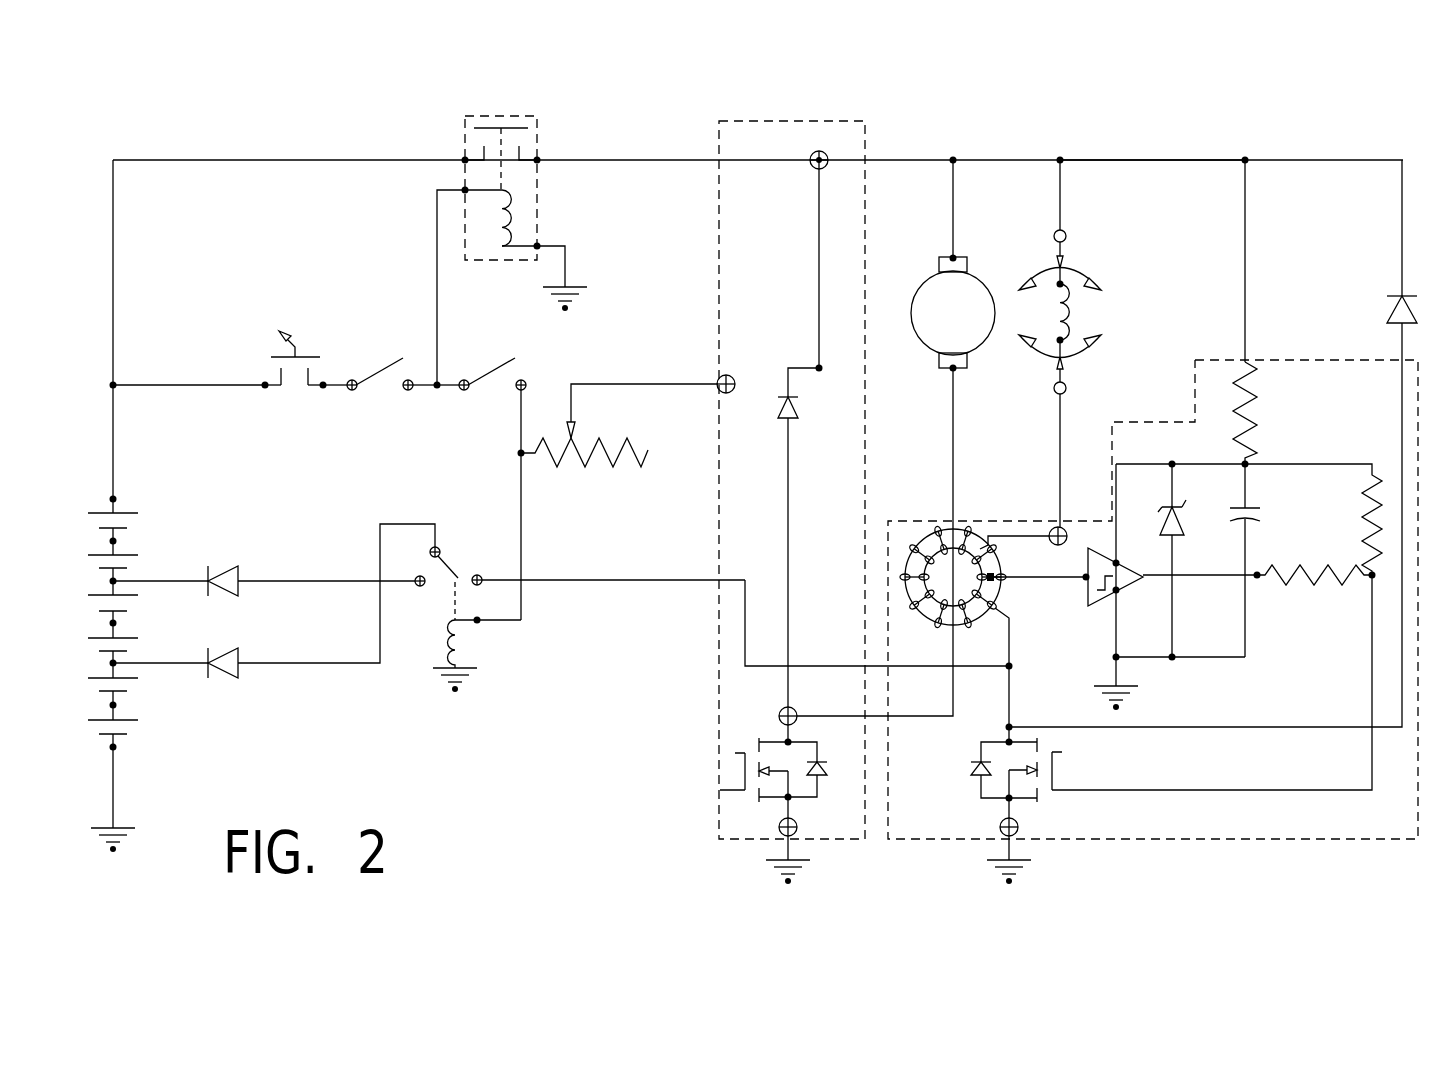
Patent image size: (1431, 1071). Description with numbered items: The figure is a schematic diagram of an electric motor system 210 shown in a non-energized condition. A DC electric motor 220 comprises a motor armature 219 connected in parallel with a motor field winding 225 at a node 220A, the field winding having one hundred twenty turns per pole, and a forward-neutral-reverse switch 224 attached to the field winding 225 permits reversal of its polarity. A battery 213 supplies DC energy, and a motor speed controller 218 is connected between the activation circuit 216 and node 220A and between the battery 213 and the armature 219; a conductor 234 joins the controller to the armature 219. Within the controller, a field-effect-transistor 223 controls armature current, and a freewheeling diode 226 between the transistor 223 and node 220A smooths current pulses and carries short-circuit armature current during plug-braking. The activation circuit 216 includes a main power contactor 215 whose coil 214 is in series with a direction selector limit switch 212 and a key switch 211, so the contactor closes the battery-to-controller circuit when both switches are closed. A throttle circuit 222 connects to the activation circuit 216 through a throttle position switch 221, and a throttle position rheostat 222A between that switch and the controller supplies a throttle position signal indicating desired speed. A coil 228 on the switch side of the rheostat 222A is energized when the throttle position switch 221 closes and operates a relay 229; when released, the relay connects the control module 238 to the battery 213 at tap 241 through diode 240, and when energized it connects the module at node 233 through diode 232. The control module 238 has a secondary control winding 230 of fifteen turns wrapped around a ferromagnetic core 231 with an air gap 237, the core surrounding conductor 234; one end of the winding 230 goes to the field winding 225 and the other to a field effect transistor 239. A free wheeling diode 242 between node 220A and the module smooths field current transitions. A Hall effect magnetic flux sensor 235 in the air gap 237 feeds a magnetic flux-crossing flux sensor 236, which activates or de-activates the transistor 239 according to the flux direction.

The electric motor system 210 is at (255, 148).
The key switch 211 is at (303, 323).
The direction selector limit switch 212 is at (389, 363).
The battery 213 is at (130, 501).
The coil 214 is at (520, 225).
The main power contactor 215 is at (438, 178).
The activation circuit 216 is at (290, 247).
The motor speed controller 218 is at (870, 120).
The motor armature 219 is at (925, 275).
The DC electric motor 220 is at (1245, 132).
The node 220A is at (1125, 152).
The throttle position switch 221 is at (500, 362).
The throttle circuit 222 is at (578, 378).
The throttle position rheostat 222A is at (578, 473).
The field-effect-transistor 223 is at (722, 750).
The forward-neutral-reverse switch 224 is at (1088, 250).
The motor field winding 225 is at (1075, 312).
The freewheeling diode 226 is at (778, 390).
The coil 228 is at (488, 647).
The relay 229 is at (541, 533).
The secondary control winding 230 is at (982, 530).
The ferromagnetic core 231 is at (968, 533).
The diode 232 is at (243, 601).
The node 233 is at (123, 573).
The conductor 234 is at (947, 470).
The Hall effect magnetic flux sensor 235 is at (995, 583).
The magnetic flux-crossing flux sensor 236 is at (1148, 583).
The air gap 237 is at (950, 575).
The control module 238 is at (1232, 845).
The field effect transistor 239 is at (1068, 757).
The diode 240 is at (243, 679).
The tap 241 is at (220, 721).
The free wheeling diode 242 is at (1390, 306).